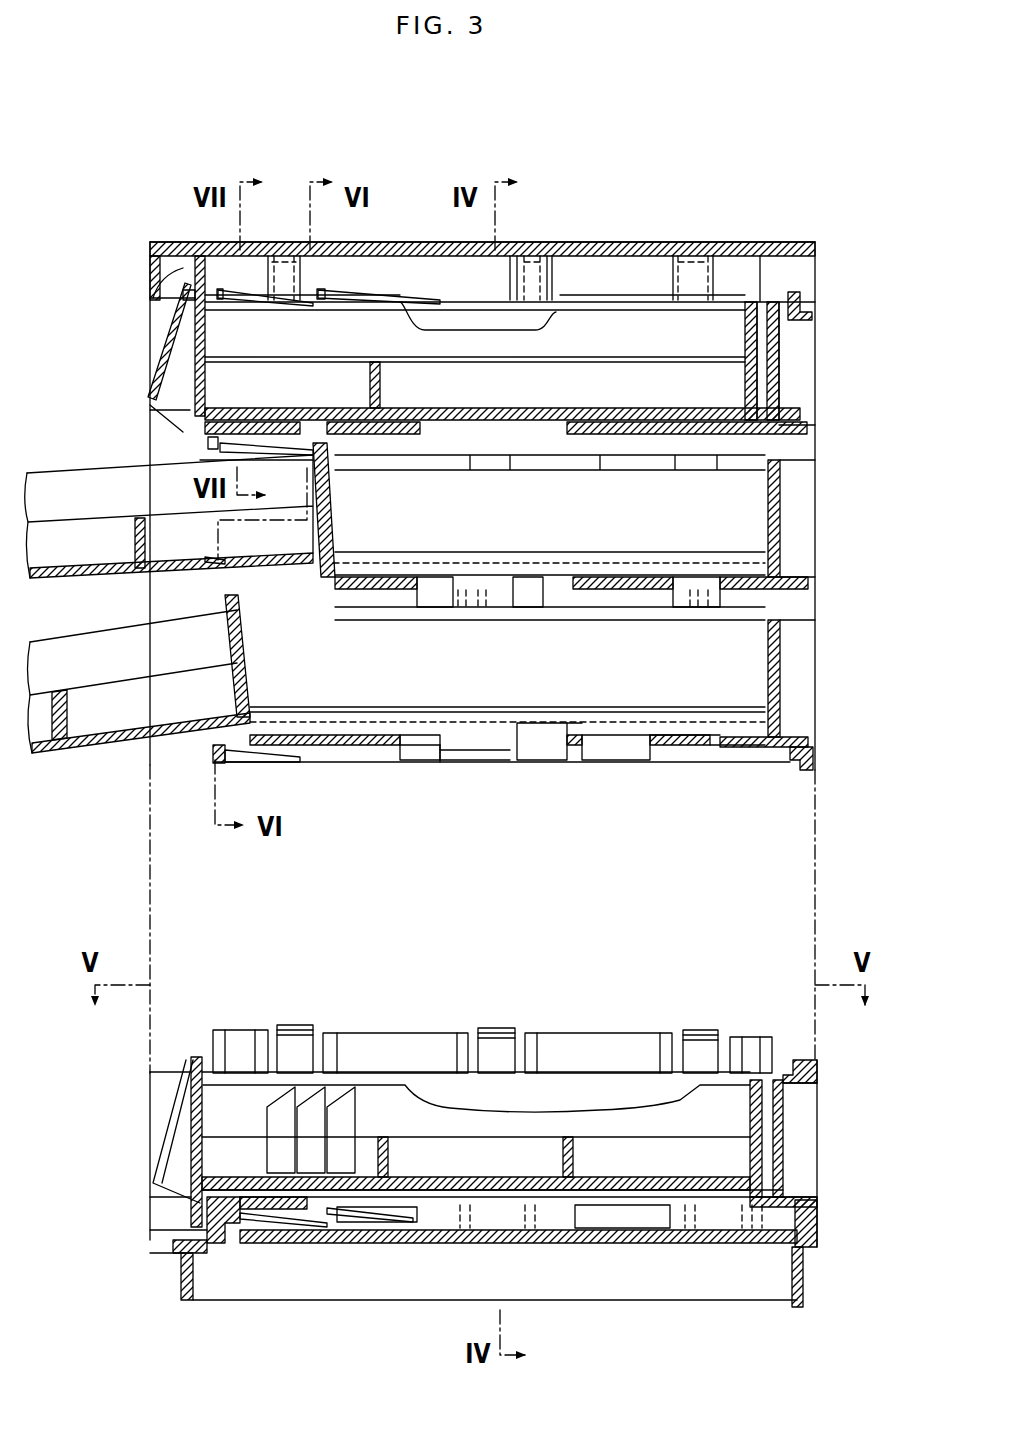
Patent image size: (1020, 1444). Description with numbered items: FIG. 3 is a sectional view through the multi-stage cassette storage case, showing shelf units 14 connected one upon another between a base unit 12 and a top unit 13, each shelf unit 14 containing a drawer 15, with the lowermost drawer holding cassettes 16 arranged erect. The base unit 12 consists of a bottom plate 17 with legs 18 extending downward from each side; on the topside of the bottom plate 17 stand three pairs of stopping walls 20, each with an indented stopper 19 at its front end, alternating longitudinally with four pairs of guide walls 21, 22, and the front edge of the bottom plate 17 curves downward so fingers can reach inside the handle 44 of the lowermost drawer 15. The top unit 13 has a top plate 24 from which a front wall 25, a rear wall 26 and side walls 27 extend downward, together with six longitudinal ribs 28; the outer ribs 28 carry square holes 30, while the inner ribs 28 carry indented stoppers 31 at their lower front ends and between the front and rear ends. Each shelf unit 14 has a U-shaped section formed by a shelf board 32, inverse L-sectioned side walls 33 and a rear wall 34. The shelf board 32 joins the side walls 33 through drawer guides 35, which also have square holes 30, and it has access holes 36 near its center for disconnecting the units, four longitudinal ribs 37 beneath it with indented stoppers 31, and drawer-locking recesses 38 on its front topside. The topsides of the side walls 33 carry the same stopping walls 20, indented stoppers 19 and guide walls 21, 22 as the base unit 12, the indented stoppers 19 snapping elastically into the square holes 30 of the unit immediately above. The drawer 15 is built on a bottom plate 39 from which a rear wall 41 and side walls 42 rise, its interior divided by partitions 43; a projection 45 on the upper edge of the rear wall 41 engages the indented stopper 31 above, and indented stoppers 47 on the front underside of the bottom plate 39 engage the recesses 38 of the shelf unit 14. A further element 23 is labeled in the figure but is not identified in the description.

The base unit 12 is at (464, 1315).
The top unit 13 is at (501, 222).
The shelf unit 14 is at (465, 749).
The drawer 15 is at (450, 754).
The cassettes 16 is at (151, 1228).
The bottom plate 17 is at (518, 1303).
The legs 18 is at (832, 1280).
The indented stoppers 19 is at (491, 842).
The stopping walls 20 is at (526, 996).
The guide walls 21 is at (498, 994).
The guide walls 22 is at (501, 993).
The base flange 23 is at (137, 1275).
The top plate 24 is at (780, 240).
The front wall 25 is at (124, 311).
The rear wall 26 is at (830, 284).
The side walls 27 is at (121, 270).
The longitudinal ribs 28 is at (475, 237).
The square holes 30 is at (516, 513).
The indented stoppers 31 is at (297, 566).
The shelf board 32 is at (686, 789).
The side walls 33 is at (476, 906).
The rear wall 34 is at (811, 930).
The drawer guides 35 is at (581, 783).
The access holes 36 is at (473, 794).
The longitudinal ribs 37 is at (421, 794).
The recesses 38 is at (322, 603).
The bottom plate 39 is at (502, 394).
The rear wall 41 is at (720, 361).
The side walls 42 is at (471, 254).
The partitions 43 is at (475, 366).
The handle 44 is at (164, 743).
The projection 45 is at (461, 509).
The indented stoppers 47 is at (254, 398).